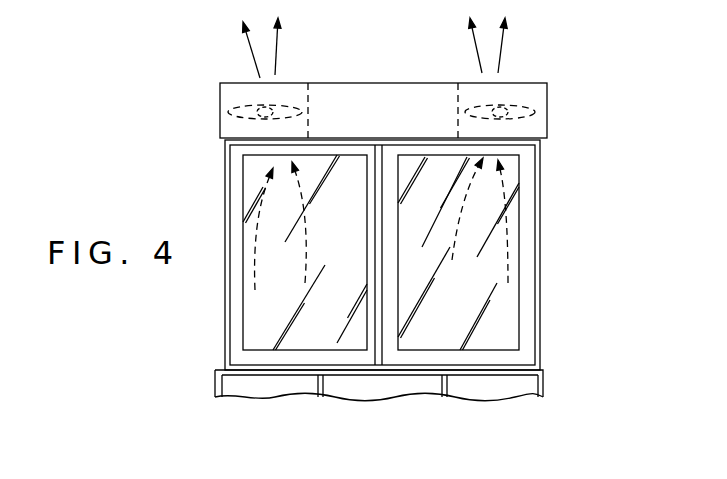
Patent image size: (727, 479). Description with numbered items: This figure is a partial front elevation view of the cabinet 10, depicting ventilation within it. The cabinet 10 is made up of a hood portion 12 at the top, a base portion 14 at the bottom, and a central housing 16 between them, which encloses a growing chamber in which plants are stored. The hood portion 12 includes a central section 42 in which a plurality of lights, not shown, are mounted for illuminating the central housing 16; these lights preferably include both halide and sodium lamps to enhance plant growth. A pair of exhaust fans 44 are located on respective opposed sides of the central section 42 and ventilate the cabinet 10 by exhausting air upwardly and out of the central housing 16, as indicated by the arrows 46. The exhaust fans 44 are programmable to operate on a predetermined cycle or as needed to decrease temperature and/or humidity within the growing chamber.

The cabinet 10 is at (388, 28).
The hood portion 12 is at (566, 117).
The base portion 14 is at (563, 381).
The central housing 16 is at (559, 222).
The central section 42 is at (380, 100).
The exhaust fans 44 is at (230, 112).
The arrows 46 is at (254, 40).